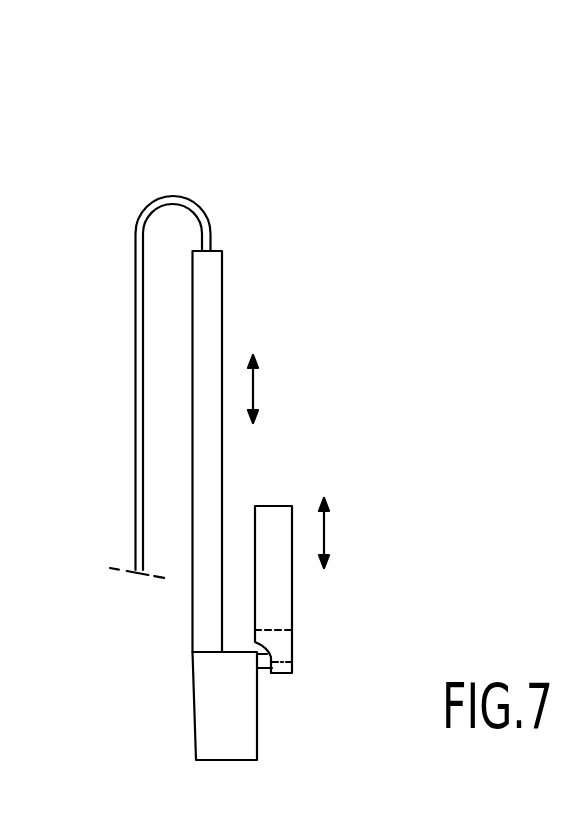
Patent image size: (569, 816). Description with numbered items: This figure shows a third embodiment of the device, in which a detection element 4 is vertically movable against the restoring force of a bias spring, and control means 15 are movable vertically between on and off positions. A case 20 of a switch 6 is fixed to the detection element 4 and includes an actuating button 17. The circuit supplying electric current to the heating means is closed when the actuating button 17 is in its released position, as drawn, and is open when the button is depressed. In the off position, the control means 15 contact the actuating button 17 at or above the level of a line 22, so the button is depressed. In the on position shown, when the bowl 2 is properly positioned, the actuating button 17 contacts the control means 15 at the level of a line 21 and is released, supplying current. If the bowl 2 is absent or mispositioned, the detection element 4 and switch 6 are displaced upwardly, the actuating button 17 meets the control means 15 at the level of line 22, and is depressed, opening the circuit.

The bowl 2 is at (140, 390).
The detection element 4 is at (212, 313).
The switch 6 is at (180, 731).
The control means 15 is at (277, 522).
The actuating button 17 is at (263, 660).
The case of the switch 20 is at (210, 680).
The line 21 is at (294, 662).
The line 22 is at (293, 630).